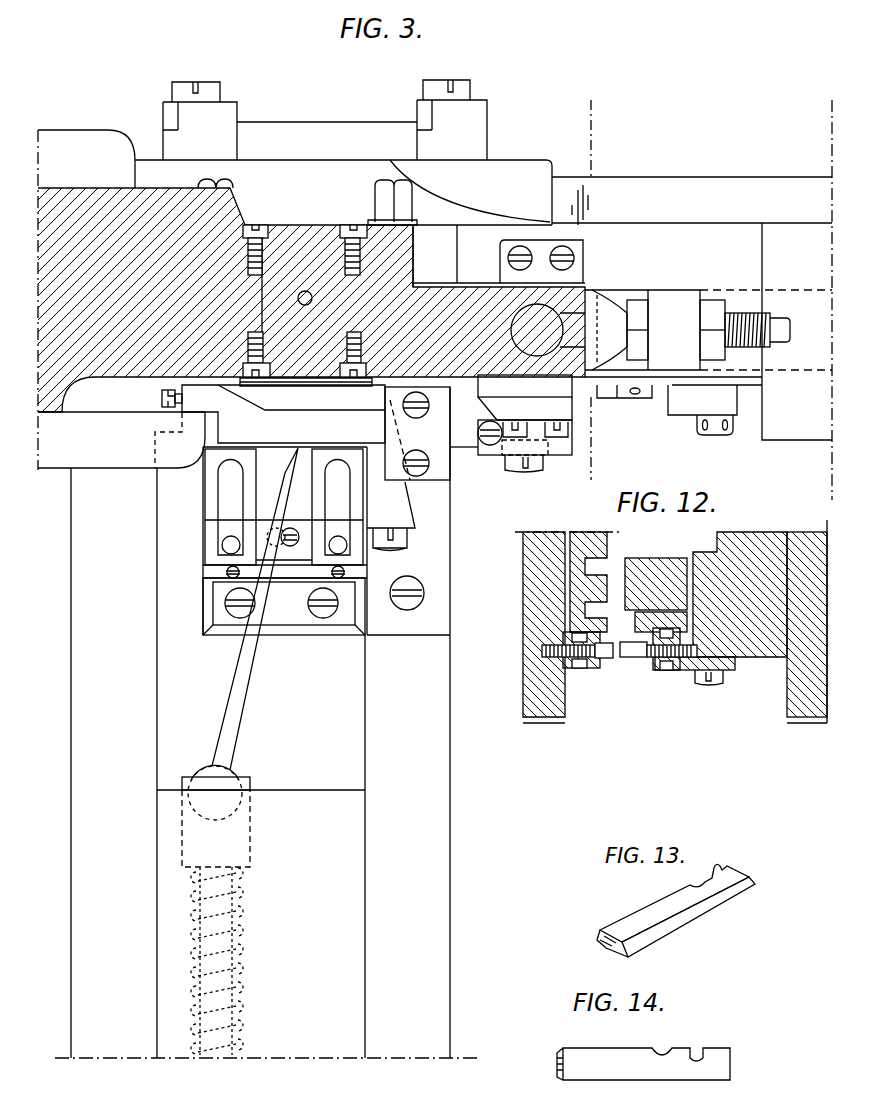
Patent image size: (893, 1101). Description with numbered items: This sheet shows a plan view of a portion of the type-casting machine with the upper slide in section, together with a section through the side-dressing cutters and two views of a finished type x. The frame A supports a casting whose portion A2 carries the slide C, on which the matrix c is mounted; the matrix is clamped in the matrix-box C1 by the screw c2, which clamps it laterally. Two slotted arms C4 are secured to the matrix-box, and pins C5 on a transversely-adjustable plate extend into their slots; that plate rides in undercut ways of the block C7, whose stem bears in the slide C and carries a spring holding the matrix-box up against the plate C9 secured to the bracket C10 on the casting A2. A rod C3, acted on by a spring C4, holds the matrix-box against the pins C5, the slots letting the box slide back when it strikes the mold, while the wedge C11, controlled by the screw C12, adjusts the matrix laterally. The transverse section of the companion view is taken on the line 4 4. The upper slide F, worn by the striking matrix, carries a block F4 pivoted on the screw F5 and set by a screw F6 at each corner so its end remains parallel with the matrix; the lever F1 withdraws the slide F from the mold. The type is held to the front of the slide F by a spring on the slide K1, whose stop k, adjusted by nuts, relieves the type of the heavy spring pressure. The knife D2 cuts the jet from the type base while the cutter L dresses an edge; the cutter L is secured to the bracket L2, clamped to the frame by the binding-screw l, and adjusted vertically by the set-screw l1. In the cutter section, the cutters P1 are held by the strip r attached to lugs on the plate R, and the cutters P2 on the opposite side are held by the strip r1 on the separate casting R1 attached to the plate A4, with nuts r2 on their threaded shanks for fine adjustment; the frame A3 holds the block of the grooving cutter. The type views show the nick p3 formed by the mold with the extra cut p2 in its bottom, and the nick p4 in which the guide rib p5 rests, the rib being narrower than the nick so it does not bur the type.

In FIG. 3, the section line 4 4 is at (594, 284).
In FIG. 3, the slide F is at (403, 300).
In FIG. 3, the lever F1 is at (346, 301).
In FIG. 3, the block F4 is at (304, 354).
In FIG. 3, the screw F5 is at (303, 290).
In FIG. 3, the screw F6 is at (262, 216).
In FIG. 3, the stop k is at (569, 330).
In FIG. 3, the slide K1 is at (712, 329).
In FIG. 3, the knife D2 is at (499, 254).
In FIG. 3, the matrix c is at (299, 380).
In FIG. 3, the screw c2 is at (162, 398).
In FIG. 3, the matrix-box C1 is at (283, 414).
In FIG. 3, the plate C9 is at (319, 423).
In FIG. 3, the wedge C11 is at (391, 541).
In FIG. 3, the screw C12 is at (389, 549).
In FIG. 3, the bracket C10 is at (408, 595).
In FIG. 3, the slotted arms / spring C4 is at (210, 488).
In FIG. 3, the pins C5 is at (283, 539).
In FIG. 3, the block C7 is at (269, 465).
In FIG. 3, the rod C3 is at (238, 692).
In FIG. 3, the frame A is at (114, 763).
In FIG. 3, the portion of casting A2 is at (382, 846).
In FIG. 3, the slide C is at (261, 764).
In FIG. 3, the cutter L is at (525, 415).
In FIG. 3, the set-screw l1 is at (481, 433).
In FIG. 3, the bracket L2 is at (505, 464).
In FIG. 3, the binding-screw l is at (524, 473).
In FIG. 12, the plate A4 is at (740, 594).
In FIG. 12, the frame A3 is at (807, 624).
In FIG. 12, the plate R is at (581, 643).
In FIG. 12, the casting R1 is at (687, 660).
In FIG. 12, the cutters P1 is at (577, 667).
In FIG. 12, the cutters P2 is at (658, 667).
In FIG. 12, the strip r is at (592, 686).
In FIG. 12, the strip r1 is at (656, 687).
In FIG. 12, the nuts r2 is at (625, 682).
In FIG. 13, the type x is at (676, 910).
In FIG. 14, the type x is at (643, 1064).
In FIG. 13, the extra cut p2 is at (706, 885).
In FIG. 13, the nick p3 is at (696, 882).
In FIG. 14, the nick p3 is at (662, 1050).
In FIG. 13, the nick p4 is at (714, 868).
In FIG. 14, the nick p4 is at (715, 1063).
In FIG. 14, the rib p5 is at (692, 1030).